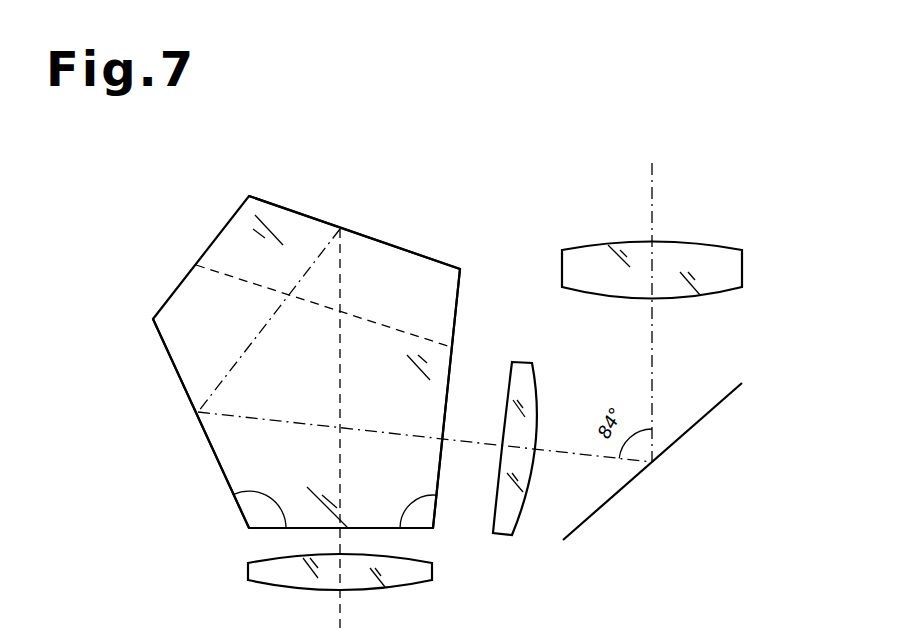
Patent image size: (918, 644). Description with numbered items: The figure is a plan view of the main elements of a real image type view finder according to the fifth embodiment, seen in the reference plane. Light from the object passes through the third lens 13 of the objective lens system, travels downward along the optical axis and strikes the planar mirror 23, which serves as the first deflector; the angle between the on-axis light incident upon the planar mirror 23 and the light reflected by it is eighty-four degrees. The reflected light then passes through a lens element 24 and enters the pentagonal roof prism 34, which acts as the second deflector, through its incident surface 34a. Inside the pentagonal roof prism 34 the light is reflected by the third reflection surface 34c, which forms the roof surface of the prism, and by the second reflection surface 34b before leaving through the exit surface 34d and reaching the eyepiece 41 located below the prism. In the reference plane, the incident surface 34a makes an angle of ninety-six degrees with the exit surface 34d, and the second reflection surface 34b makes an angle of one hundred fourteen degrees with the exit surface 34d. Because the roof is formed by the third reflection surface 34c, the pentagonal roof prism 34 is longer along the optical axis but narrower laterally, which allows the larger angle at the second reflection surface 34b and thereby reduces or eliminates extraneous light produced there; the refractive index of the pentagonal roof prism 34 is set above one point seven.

The pentagonal roof prism 34 is at (340, 382).
The incident surface 34a is at (455, 320).
The second reflection surface 34b is at (220, 465).
The third reflection surface 34c is at (392, 243).
The exit surface 34d is at (367, 530).
The eyepiece 41 is at (308, 587).
The third lens 13 is at (700, 246).
The lens 24 is at (528, 388).
The planar mirror 23 is at (677, 443).